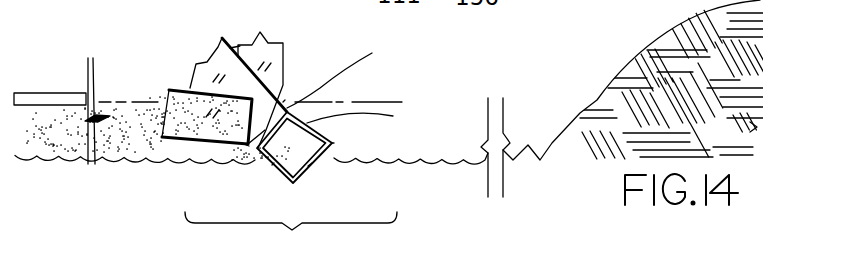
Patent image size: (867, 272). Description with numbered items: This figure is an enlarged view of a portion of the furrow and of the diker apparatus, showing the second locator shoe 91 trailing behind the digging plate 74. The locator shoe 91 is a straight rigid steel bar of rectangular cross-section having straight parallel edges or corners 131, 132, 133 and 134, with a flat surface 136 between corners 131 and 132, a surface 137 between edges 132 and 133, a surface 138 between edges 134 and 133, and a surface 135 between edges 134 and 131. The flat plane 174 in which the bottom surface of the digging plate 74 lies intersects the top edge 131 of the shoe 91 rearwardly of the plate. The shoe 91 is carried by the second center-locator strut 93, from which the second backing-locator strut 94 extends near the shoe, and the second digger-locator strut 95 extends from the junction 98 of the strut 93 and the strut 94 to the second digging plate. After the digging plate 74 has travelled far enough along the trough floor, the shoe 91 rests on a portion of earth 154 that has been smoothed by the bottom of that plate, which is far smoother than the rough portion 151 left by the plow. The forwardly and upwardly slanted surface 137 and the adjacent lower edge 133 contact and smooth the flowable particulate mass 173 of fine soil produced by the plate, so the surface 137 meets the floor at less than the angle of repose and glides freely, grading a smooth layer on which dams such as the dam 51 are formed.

The digging plate 74 is at (81, 94).
The flat plane 174 is at (100, 101).
The particulate mass 173 is at (110, 130).
The second backing-locator strut 94 is at (193, 108).
The second center-locator strut 93 is at (230, 66).
The junction 98 is at (235, 40).
The second digger-locator strut 95 is at (277, 56).
The surface 136 is at (286, 98).
The top edge 131 is at (346, 68).
The surface 135 is at (368, 117).
The lower edge 133 is at (294, 184).
The edge 134 is at (334, 143).
The surface 138 is at (308, 166).
The forwardly and upwardly slanted surface 137 is at (270, 163).
The edge 132 is at (248, 145).
The smoother earth portion 154 is at (163, 157).
The rough earth portion 151 is at (528, 145).
The dam 51 is at (606, 80).
The second locator shoe 91 is at (291, 238).